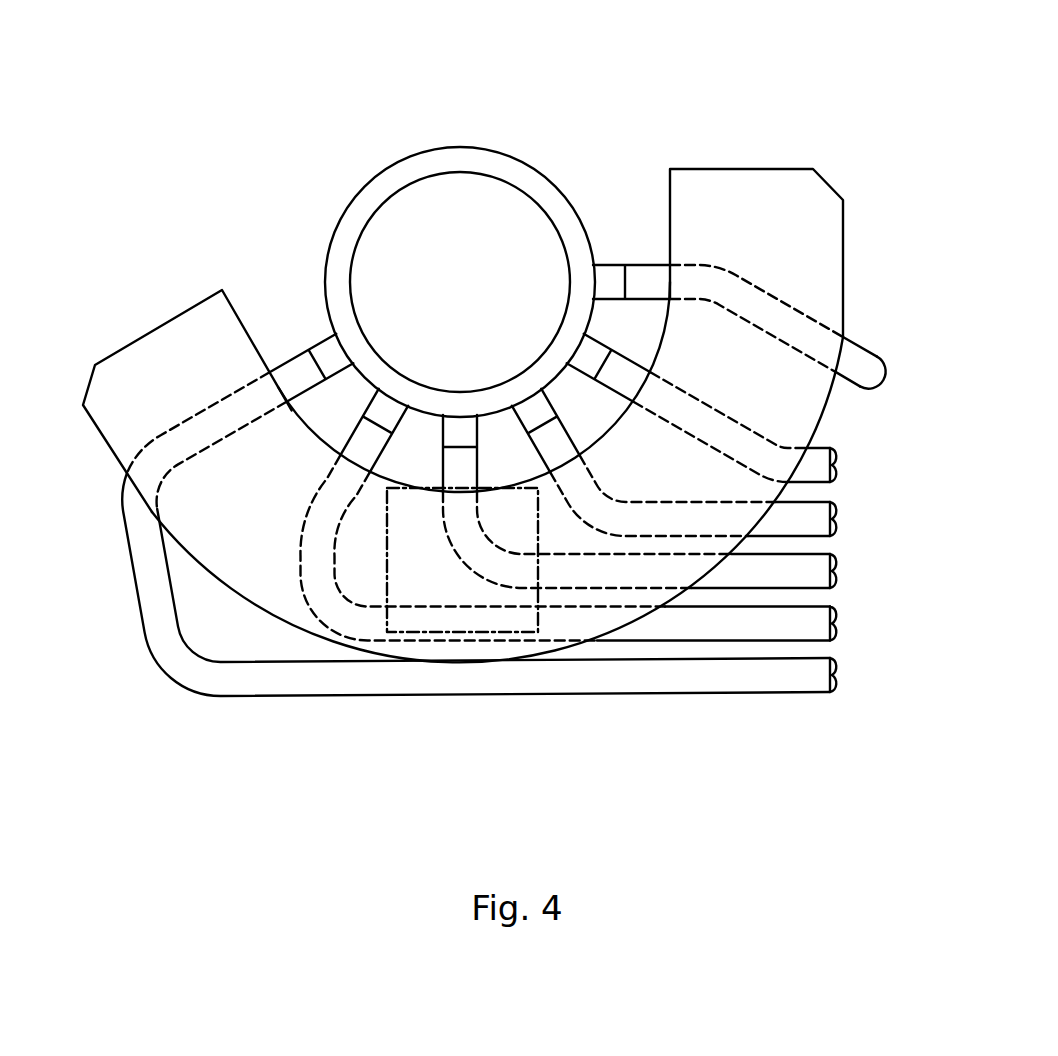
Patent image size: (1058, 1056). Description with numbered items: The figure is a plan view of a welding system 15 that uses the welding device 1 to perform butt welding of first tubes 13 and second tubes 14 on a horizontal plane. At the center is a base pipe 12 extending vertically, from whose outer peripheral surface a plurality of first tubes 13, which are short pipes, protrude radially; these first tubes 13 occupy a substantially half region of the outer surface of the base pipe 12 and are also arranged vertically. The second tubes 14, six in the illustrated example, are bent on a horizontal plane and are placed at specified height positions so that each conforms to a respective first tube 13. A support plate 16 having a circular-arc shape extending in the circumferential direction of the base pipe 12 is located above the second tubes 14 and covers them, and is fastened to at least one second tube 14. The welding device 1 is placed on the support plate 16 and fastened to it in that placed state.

The welding device 1 is at (410, 559).
The base pipe 12 is at (440, 168).
The first tubes 13 is at (323, 357).
The second tubes 14 is at (798, 570).
The welding system 15 is at (129, 300).
The support plate 16 is at (740, 193).